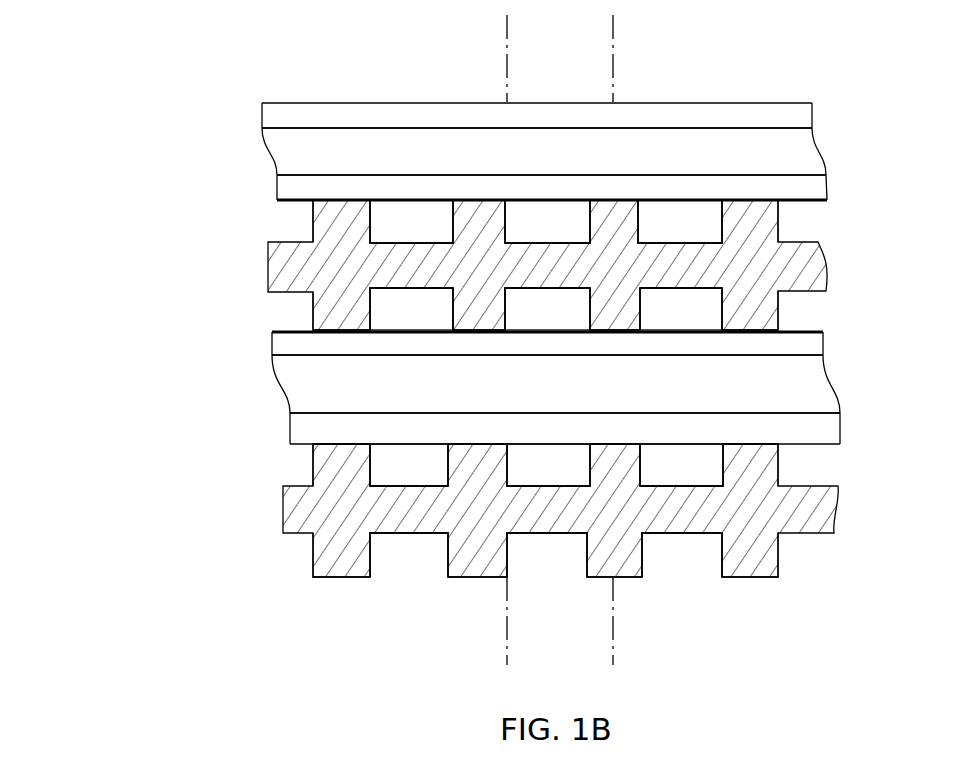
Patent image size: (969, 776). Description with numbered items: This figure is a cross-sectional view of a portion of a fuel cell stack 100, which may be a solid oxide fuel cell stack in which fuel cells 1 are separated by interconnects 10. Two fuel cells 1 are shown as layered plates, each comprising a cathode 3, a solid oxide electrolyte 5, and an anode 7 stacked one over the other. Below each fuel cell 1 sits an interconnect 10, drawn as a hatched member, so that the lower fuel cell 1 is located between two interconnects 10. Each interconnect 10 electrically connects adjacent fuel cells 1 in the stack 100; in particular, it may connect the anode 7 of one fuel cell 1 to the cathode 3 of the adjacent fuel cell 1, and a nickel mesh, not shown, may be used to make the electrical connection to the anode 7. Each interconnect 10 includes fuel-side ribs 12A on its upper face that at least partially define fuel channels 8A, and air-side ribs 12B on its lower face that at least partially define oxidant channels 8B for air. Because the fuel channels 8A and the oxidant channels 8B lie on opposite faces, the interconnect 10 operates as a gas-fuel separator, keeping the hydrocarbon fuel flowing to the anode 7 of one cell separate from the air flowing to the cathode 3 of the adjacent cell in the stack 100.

The fuel cell stack 100 is at (145, 217).
The fuel cell 1 is at (547, 269).
The cathode 3 is at (262, 116).
The solid oxide electrolyte 5 is at (268, 153).
The anode 7 is at (277, 190).
The interconnect 10 is at (557, 388).
The fuel channels 8A is at (392, 238).
The oxidant channels 8B is at (392, 323).
The fuel-side ribs 12A is at (313, 224).
The air-side ribs 12B is at (313, 310).